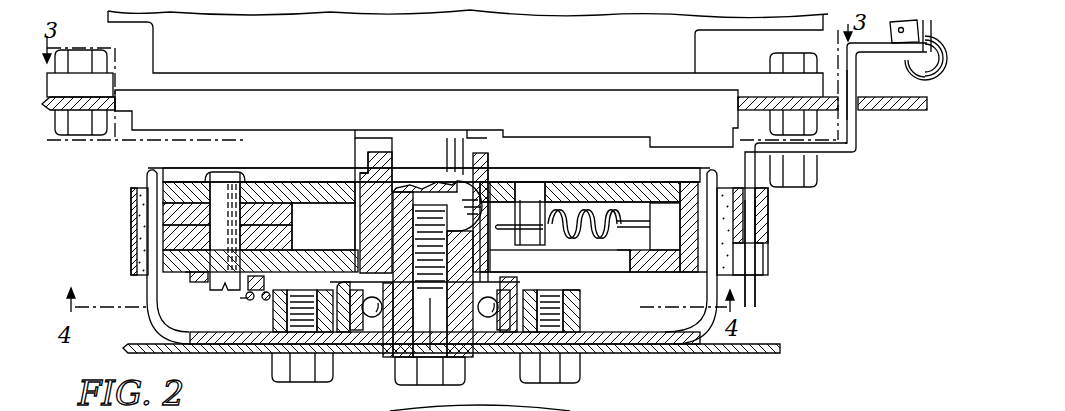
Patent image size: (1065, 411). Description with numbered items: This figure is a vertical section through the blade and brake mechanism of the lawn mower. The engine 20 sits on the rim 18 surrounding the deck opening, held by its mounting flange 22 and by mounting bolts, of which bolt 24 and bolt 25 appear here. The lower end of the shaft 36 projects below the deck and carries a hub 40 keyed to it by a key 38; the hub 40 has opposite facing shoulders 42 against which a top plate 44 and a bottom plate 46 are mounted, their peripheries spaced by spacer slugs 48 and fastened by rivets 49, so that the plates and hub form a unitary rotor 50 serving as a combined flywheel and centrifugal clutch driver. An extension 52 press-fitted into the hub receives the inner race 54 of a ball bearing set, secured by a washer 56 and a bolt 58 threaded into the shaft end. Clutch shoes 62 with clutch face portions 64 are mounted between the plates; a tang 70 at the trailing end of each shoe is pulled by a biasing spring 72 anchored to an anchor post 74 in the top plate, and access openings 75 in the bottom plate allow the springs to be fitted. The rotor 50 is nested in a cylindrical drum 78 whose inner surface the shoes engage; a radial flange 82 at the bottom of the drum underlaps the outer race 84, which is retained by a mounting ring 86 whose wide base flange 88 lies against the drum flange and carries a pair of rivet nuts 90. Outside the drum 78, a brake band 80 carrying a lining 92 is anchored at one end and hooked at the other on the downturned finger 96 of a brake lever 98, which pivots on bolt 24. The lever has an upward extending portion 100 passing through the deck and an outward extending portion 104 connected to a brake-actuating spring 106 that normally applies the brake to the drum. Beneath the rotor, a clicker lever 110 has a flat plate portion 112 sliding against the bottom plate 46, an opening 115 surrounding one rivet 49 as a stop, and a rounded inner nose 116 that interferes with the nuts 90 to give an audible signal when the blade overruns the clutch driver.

The rim 18 is at (90, 107).
The engine 20 is at (621, 50).
The mounting flange 22 is at (70, 88).
The bolt 24 is at (790, 63).
The bolt 25 is at (83, 61).
The lower end of the shaft 36 is at (435, 165).
The key 38 is at (460, 193).
The hub 40 is at (488, 175).
The shoulders 42 is at (360, 240).
The top plate 44 is at (604, 197).
The bottom plate 46 is at (655, 268).
The spacer slugs 48 is at (291, 218).
The rivets 49 is at (218, 180).
The rotor 50 is at (550, 173).
The extension 52 is at (416, 303).
The inner race 54 is at (373, 325).
The washer 56 is at (408, 310).
The bolt 58 is at (458, 372).
The clutch shoes 62 is at (694, 267).
The clutch face portions 64 is at (674, 262).
The tang 70 is at (653, 237).
The biasing spring 72 is at (581, 210).
The anchor post 74 is at (523, 207).
The access openings 75 is at (626, 263).
The cylindrical drum 78 is at (717, 208).
The brake band 80 is at (132, 220).
The radial flange 82 is at (663, 345).
The outer race 84 is at (497, 345).
The mounting ring 86 is at (513, 287).
The base flange 88 is at (263, 335).
The rivet nuts 90 is at (573, 304).
The lining 92 is at (143, 257).
The downturned finger 96 is at (762, 288).
The brake lever 98 is at (839, 151).
The upward extending portion 100 is at (853, 120).
The outward extending portion 104 is at (873, 50).
The brake-actuating spring 106 is at (947, 82).
The clicker lever 110 is at (248, 301).
The flat plate portion 112 is at (188, 273).
The opening 115 is at (210, 300).
The rounded inner nose 116 is at (247, 310).